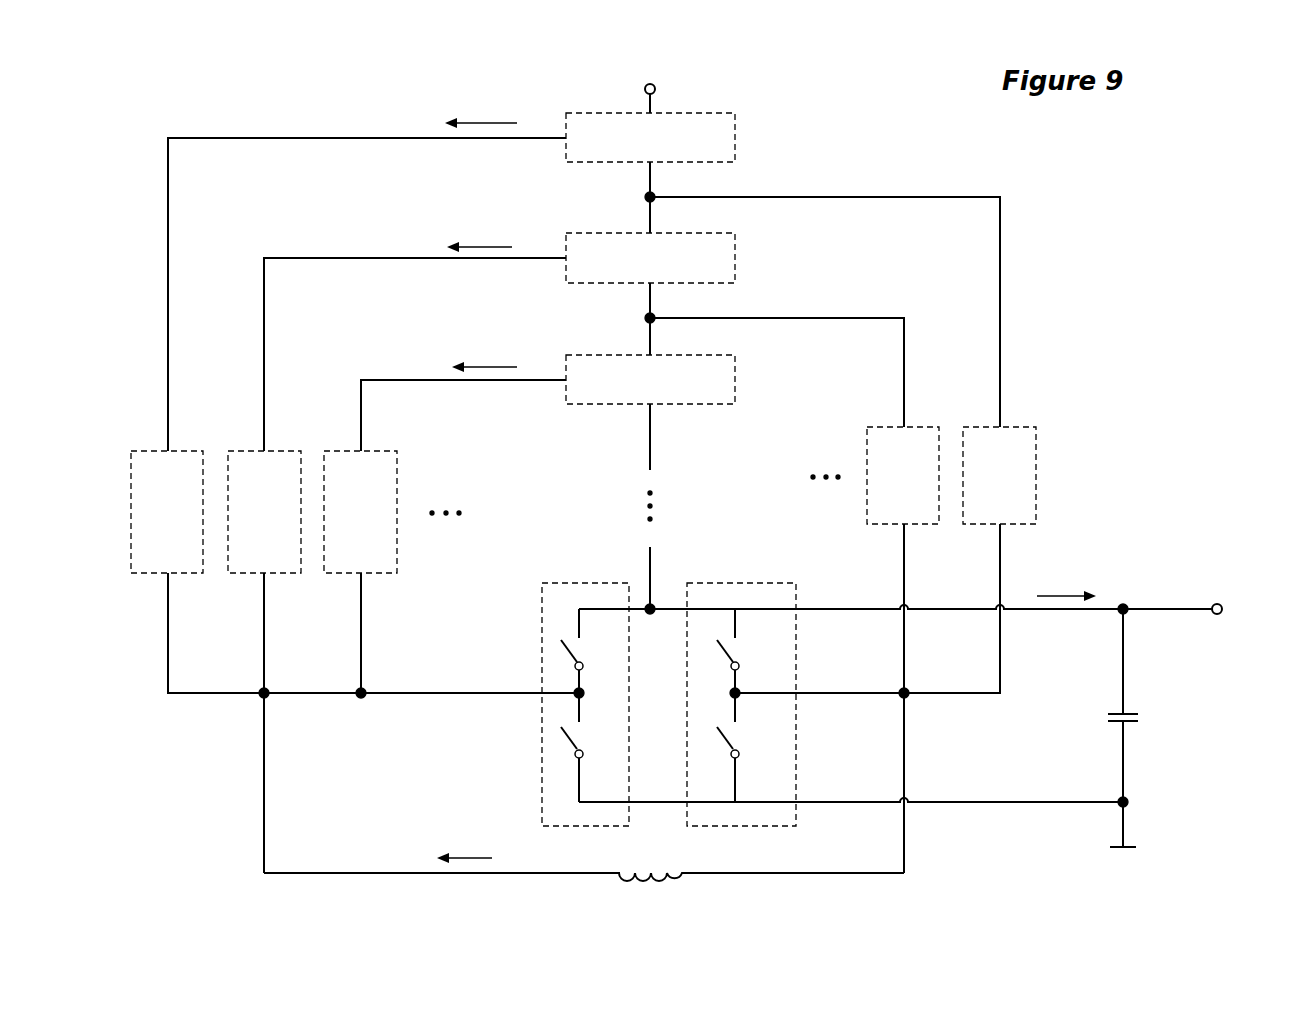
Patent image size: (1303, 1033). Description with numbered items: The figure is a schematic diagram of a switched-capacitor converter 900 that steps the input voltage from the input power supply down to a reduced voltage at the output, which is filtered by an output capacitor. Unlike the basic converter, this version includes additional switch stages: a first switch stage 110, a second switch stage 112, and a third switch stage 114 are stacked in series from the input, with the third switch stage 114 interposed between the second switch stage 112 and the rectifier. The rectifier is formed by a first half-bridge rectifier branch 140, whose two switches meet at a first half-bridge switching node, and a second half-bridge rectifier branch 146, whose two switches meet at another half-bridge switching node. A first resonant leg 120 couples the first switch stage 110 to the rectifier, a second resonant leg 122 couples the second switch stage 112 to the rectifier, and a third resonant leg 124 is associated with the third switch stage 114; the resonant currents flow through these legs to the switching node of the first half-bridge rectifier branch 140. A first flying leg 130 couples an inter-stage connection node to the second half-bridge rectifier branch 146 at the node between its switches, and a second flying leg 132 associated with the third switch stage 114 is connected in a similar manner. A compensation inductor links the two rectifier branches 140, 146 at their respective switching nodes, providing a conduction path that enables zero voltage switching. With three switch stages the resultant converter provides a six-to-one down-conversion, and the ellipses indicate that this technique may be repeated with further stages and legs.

The switched-capacitor converter 900 is at (258, 89).
The first switch stage 110 is at (590, 127).
The second switch stage 112 is at (591, 248).
The third switch stage 114 is at (593, 369).
The first resonant leg 120 is at (167, 502).
The second resonant leg 122 is at (264, 502).
The third resonant leg 124 is at (360, 502).
The first flying leg 130 is at (999, 465).
The second flying leg 132 is at (903, 465).
The first half-bridge rectifier branch 140 is at (585, 695).
The second half-bridge rectifier branch 146 is at (741, 695).